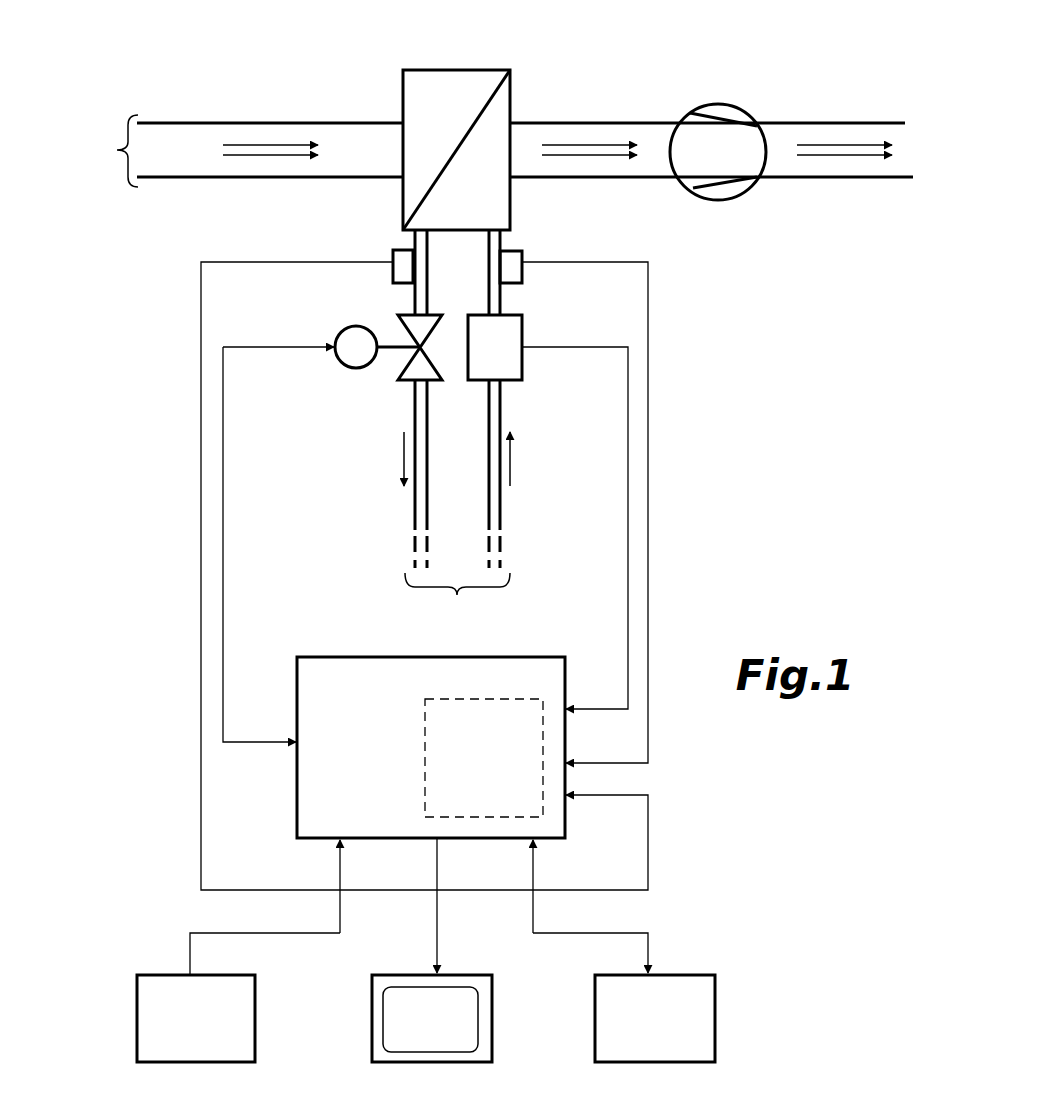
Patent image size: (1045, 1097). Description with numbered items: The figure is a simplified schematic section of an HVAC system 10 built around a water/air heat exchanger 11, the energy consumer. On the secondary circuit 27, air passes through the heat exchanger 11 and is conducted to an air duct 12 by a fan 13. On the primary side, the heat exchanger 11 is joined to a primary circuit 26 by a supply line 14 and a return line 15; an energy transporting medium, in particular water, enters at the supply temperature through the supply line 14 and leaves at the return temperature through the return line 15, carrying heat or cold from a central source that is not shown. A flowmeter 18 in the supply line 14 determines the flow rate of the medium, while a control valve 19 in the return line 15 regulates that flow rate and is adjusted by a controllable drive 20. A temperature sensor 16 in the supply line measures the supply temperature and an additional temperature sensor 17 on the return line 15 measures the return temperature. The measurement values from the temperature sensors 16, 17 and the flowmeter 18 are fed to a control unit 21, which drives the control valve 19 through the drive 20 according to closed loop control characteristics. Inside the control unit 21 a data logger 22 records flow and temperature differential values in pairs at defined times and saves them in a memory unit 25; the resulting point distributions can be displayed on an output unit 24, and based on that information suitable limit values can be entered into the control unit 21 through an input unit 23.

The HVAC system 10 is at (686, 516).
The heat exchanger 11 is at (447, 70).
The air duct 12 is at (222, 122).
The fan 13 is at (733, 103).
The supply line 14 is at (500, 508).
The return line 15 is at (412, 508).
The temperature sensor (supply temperature) 16 is at (522, 250).
The temperature sensor (return temperature) 17 is at (393, 250).
The flowmeter 18 is at (510, 372).
The control valve 19 is at (400, 378).
The drive 20 is at (348, 338).
The control unit 21 is at (369, 770).
The data logger 22 is at (543, 817).
The input unit 23 is at (178, 1037).
The output unit 24 is at (412, 1037).
The memory unit 25 is at (637, 1037).
The primary circuit 26 is at (457, 605).
The secondary circuit 27 is at (101, 151).